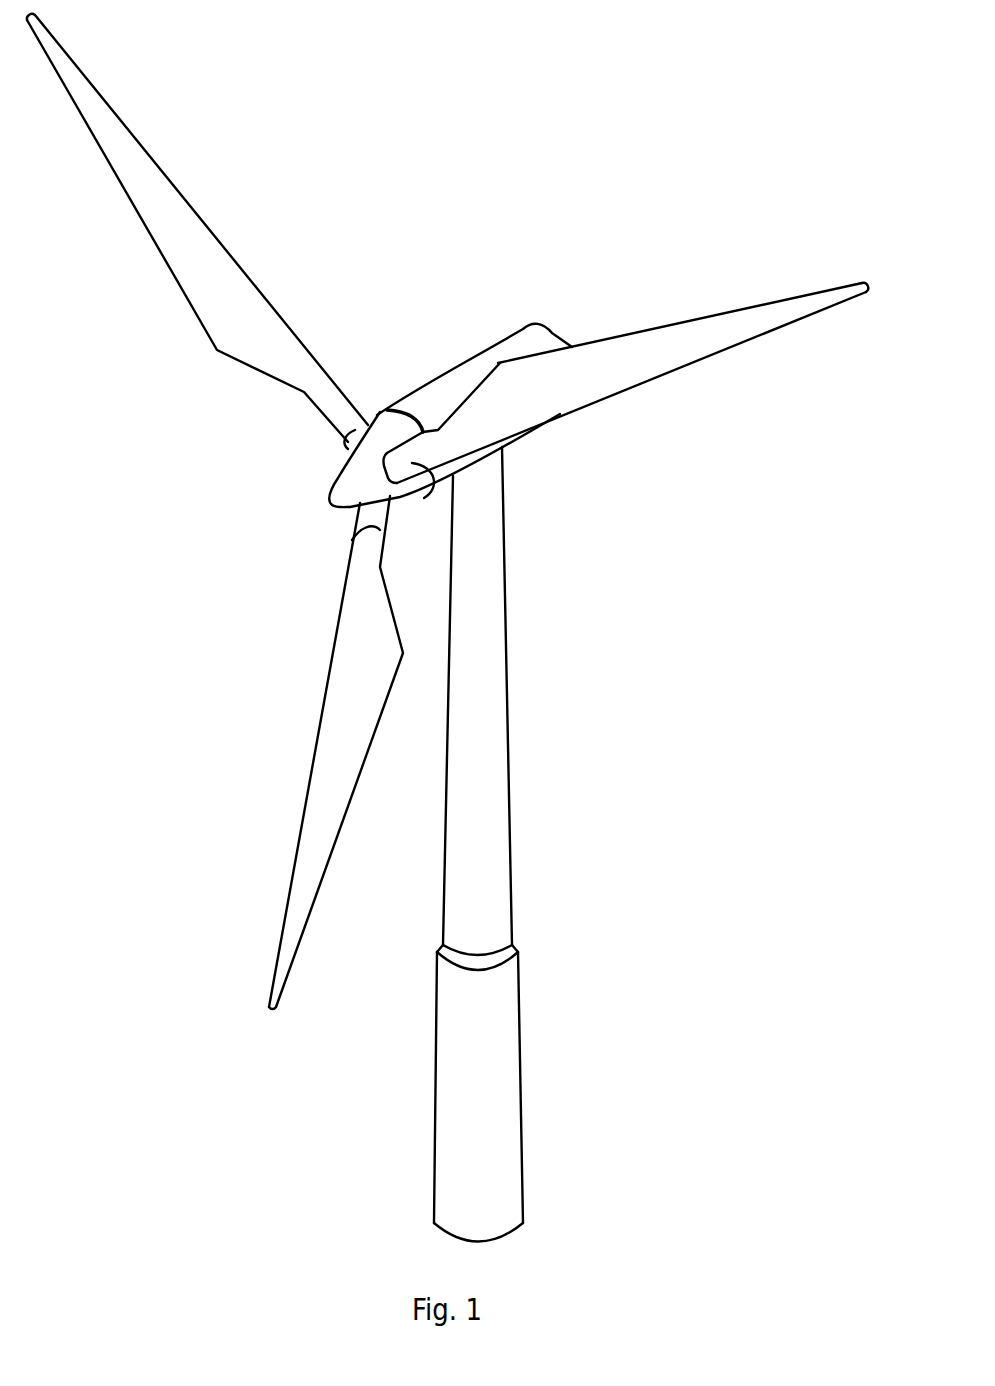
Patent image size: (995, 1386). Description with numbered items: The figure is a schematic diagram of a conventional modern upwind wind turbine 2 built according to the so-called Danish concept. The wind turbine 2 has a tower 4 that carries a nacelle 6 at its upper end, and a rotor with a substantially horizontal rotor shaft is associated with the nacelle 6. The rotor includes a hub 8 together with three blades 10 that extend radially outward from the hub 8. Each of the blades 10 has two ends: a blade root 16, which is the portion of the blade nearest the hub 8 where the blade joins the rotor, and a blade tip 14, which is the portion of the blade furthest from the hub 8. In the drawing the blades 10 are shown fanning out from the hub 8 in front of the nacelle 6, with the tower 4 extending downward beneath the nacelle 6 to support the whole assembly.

The wind turbine 2 is at (630, 773).
The tower 4 is at (498, 700).
The nacelle 6 is at (442, 389).
The hub 8 is at (345, 478).
The blade 10 is at (232, 323).
The blade tip 14 is at (68, 70).
The blade root 16 is at (355, 431).